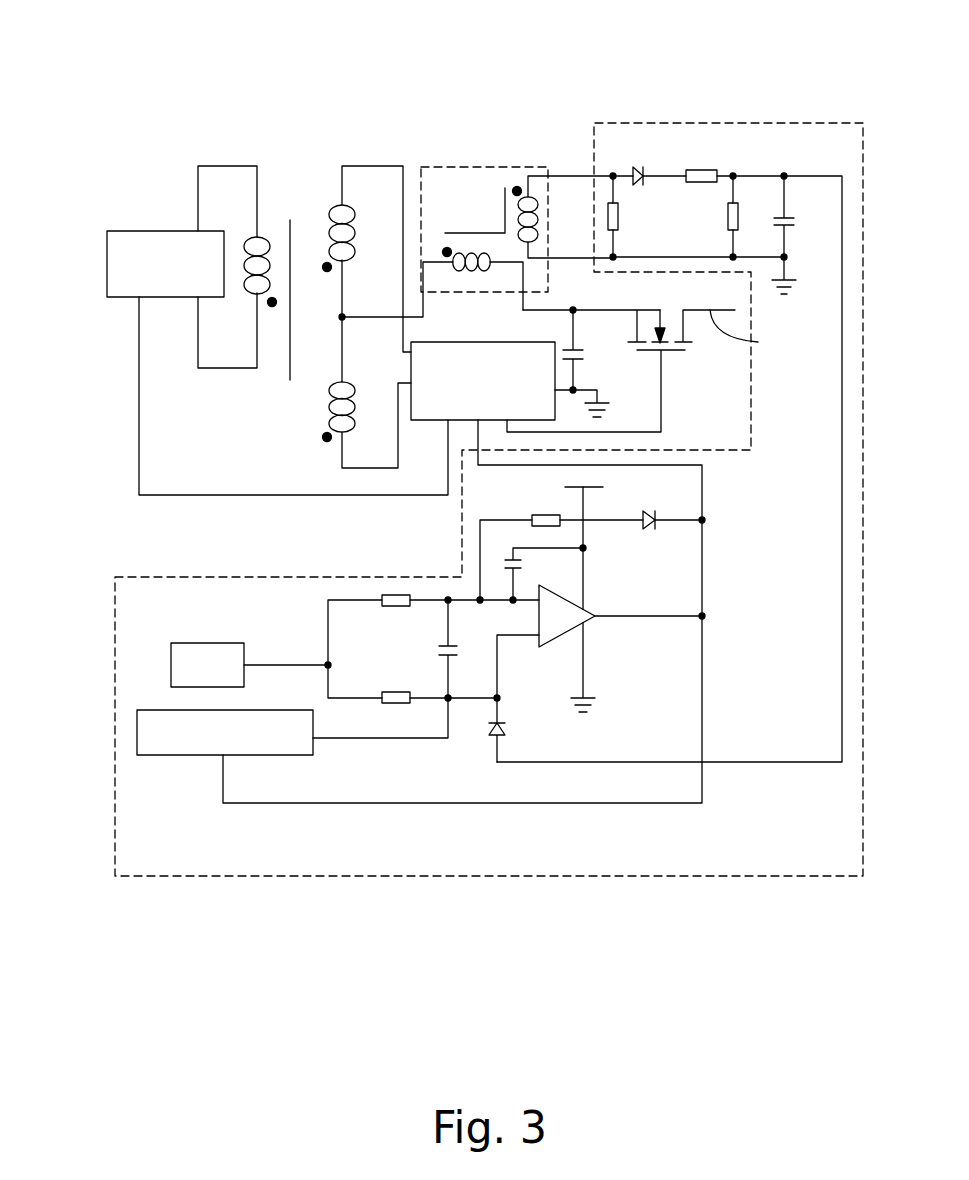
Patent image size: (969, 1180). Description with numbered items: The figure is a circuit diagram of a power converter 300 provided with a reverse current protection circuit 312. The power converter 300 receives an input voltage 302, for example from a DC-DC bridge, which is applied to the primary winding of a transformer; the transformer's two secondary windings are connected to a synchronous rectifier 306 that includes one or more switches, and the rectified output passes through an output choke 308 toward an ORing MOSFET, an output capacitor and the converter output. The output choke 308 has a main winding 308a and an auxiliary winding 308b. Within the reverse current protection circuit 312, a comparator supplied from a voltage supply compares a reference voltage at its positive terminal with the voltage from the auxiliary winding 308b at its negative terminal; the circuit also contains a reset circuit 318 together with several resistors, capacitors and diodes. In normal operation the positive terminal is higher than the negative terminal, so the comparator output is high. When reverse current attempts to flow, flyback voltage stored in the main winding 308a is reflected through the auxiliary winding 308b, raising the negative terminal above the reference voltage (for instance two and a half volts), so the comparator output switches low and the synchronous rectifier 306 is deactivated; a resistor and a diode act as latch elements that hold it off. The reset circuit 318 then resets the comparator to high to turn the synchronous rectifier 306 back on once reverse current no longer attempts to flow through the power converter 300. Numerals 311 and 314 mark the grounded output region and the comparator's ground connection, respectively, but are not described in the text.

The power converter 300 is at (242, 92).
The input voltage 302 is at (150, 231).
The synchronous rectifier 306 is at (433, 421).
The output choke 308 is at (441, 167).
The main winding 308a is at (455, 266).
The auxiliary winding 308b is at (518, 216).
The output stage 311 is at (607, 405).
The reverse current protection circuit 312 is at (152, 877).
The comparator 314 is at (593, 698).
The reset circuit 318 is at (137, 735).